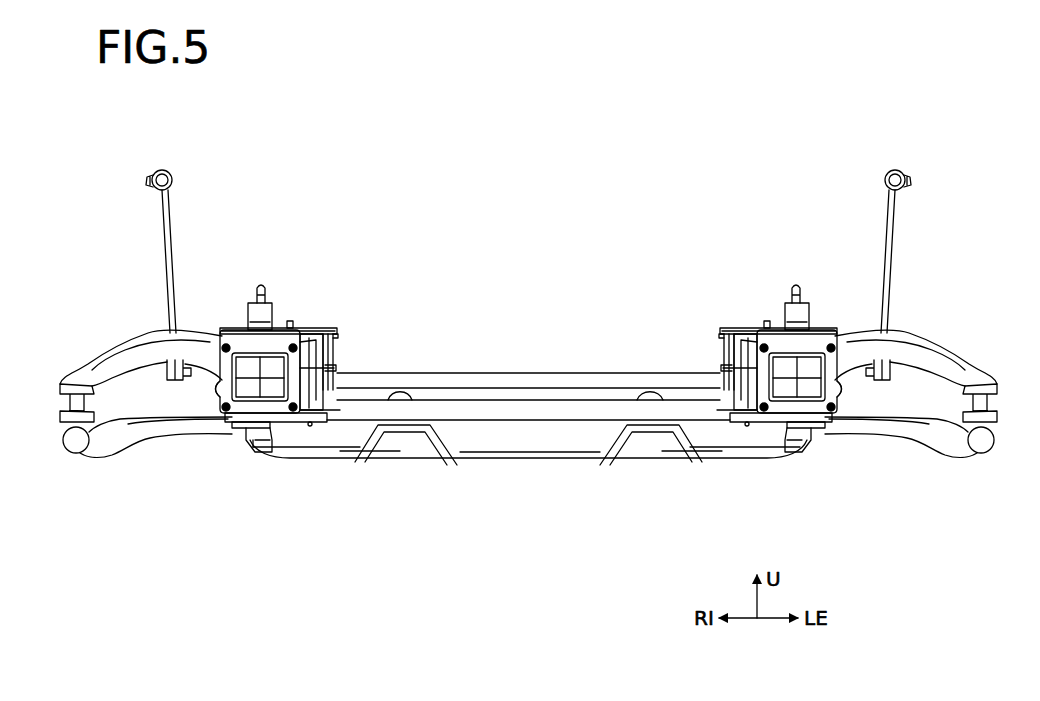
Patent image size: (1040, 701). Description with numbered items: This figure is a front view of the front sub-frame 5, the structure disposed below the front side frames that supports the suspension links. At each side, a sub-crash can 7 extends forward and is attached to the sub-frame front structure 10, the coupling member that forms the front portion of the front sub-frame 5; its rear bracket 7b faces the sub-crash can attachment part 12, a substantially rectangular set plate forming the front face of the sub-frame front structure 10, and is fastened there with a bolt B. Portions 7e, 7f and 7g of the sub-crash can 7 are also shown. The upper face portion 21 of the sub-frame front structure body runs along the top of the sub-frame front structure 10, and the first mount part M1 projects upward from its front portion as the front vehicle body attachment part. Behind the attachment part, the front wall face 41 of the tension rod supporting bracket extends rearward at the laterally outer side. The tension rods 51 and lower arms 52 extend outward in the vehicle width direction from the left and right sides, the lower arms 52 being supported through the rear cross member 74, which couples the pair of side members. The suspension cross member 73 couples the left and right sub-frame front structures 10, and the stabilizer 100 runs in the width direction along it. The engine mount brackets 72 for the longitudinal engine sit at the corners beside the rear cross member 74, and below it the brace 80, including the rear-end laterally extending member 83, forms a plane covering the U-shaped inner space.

The front sub-frame 5 is at (615, 228).
The sub-crash can 7 is at (243, 414).
The rear bracket 7b is at (266, 446).
The bracket recess 7e is at (218, 391).
The bracket upper plate 7f is at (277, 348).
The bracket side plate 7g is at (300, 369).
The sub-frame front structure 10 is at (528, 368).
The sub-crash can attachment part 12 is at (338, 334).
The upper face portion 21 is at (241, 328).
The front wall face 41 is at (334, 349).
The tension rod 51 is at (117, 348).
The lower arm 52 is at (168, 441).
The engine mount bracket 72 is at (408, 390).
The suspension cross member 73 is at (493, 400).
The rear cross member 74 is at (498, 460).
The brace 80 is at (317, 462).
The rear-end laterally extending member 83 is at (348, 463).
The stabilizer 100 is at (445, 373).
The bolt B is at (222, 334).
The first mount part M1 is at (282, 291).